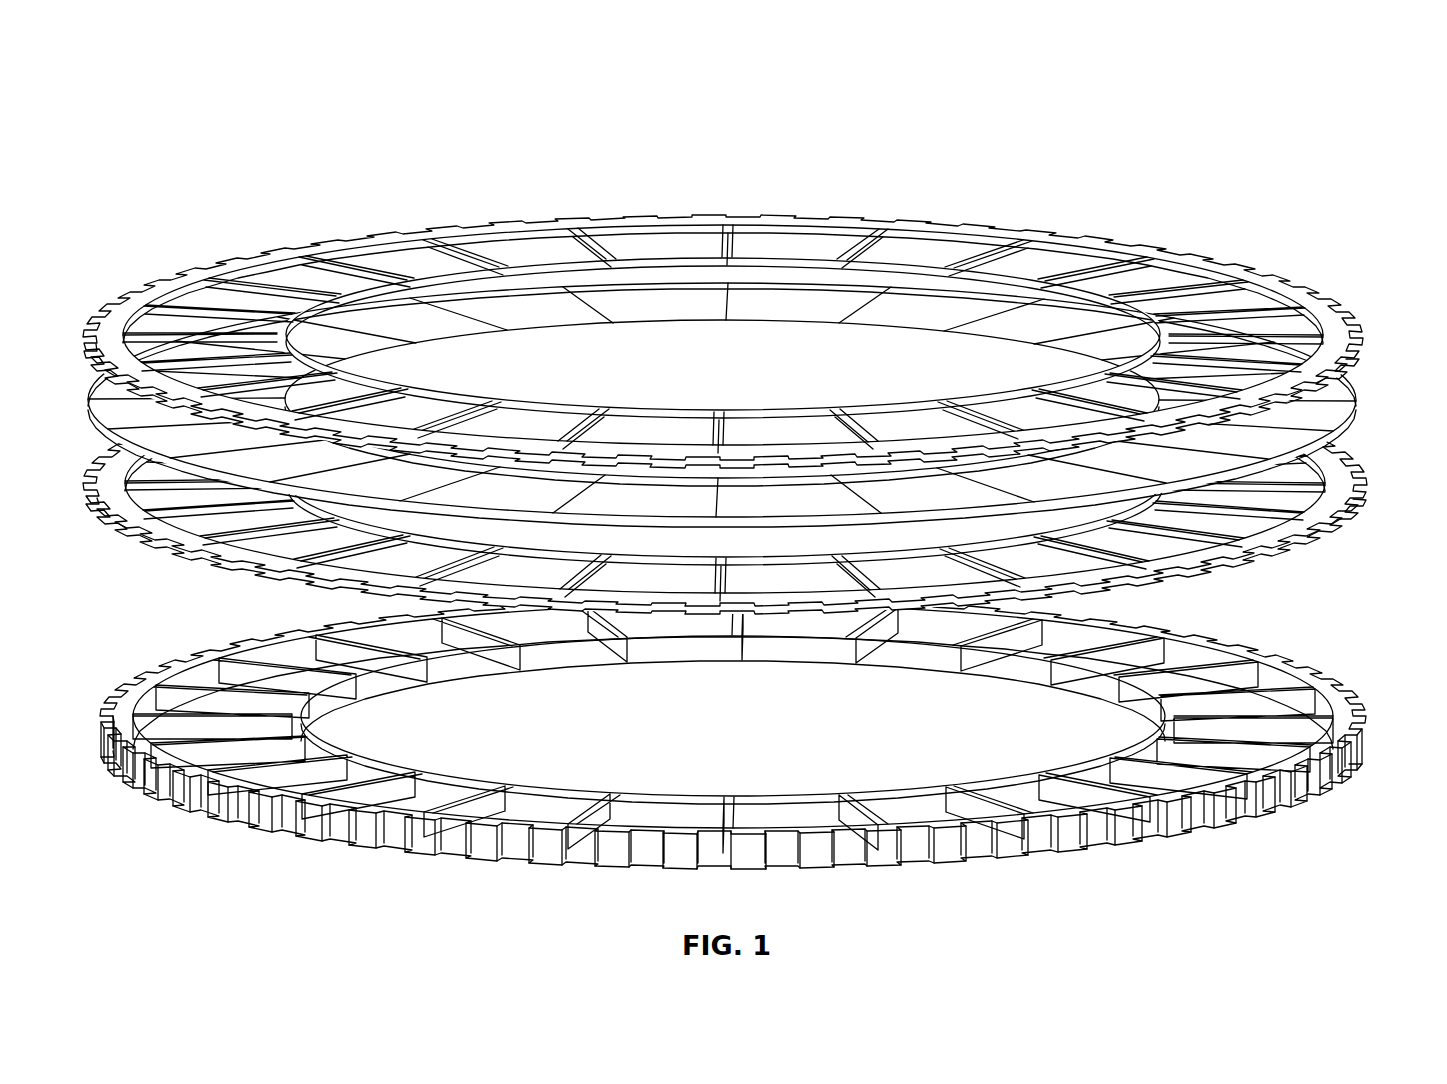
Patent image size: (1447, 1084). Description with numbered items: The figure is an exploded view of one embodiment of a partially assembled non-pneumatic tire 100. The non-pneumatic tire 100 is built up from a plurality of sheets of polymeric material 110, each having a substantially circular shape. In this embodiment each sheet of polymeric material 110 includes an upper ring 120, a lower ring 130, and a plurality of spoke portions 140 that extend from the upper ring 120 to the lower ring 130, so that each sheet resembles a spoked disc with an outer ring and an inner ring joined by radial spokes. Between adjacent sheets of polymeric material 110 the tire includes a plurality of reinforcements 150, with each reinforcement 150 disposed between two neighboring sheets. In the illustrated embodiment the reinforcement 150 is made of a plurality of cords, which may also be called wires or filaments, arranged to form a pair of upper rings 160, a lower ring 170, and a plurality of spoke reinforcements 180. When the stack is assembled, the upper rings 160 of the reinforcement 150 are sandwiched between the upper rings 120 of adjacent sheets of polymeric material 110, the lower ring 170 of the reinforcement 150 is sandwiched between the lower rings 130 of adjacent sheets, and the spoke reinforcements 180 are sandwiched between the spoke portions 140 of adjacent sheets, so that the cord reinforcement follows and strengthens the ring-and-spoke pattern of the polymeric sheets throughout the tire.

The non-pneumatic tire 100 is at (190, 84).
The sheets of polymeric material 110 is at (1312, 582).
The upper ring 120 is at (760, 495).
The lower ring 130 is at (318, 547).
The spoke portions 140 is at (215, 512).
The reinforcement 150 is at (767, 339).
The upper rings 160 is at (1360, 400).
The lower ring 170 is at (900, 325).
The spoke reinforcements 180 is at (748, 306).